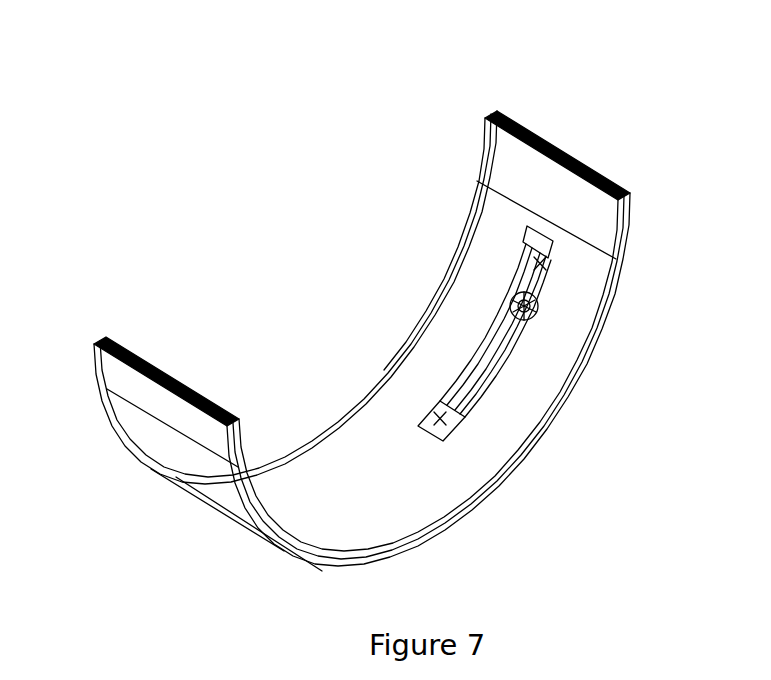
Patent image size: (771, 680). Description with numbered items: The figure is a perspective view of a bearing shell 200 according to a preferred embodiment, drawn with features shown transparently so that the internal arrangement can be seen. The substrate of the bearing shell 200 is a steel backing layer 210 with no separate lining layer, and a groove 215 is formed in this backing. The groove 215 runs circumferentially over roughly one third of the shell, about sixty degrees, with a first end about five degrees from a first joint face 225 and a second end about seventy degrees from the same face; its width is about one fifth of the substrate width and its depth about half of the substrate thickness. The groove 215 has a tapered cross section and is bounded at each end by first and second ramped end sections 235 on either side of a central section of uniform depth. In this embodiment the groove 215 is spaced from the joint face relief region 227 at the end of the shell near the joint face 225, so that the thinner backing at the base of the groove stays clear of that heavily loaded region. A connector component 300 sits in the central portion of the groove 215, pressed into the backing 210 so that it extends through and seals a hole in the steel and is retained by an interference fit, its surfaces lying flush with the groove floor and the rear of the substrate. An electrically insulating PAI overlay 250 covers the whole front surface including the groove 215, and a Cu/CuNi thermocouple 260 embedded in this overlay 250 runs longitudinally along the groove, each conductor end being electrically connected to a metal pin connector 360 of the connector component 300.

The bearing shell 200 is at (425, 311).
The steel backing layer 210 is at (417, 547).
The groove 215 is at (558, 253).
The joint face 225 is at (517, 128).
The joint face relief region 227 is at (476, 141).
The ramped end sections 235 is at (538, 228).
The PAI overlay 250 is at (628, 217).
The thermocouple 260 is at (497, 372).
The connector component 300 is at (539, 302).
The metal pin connector 360 is at (505, 293).